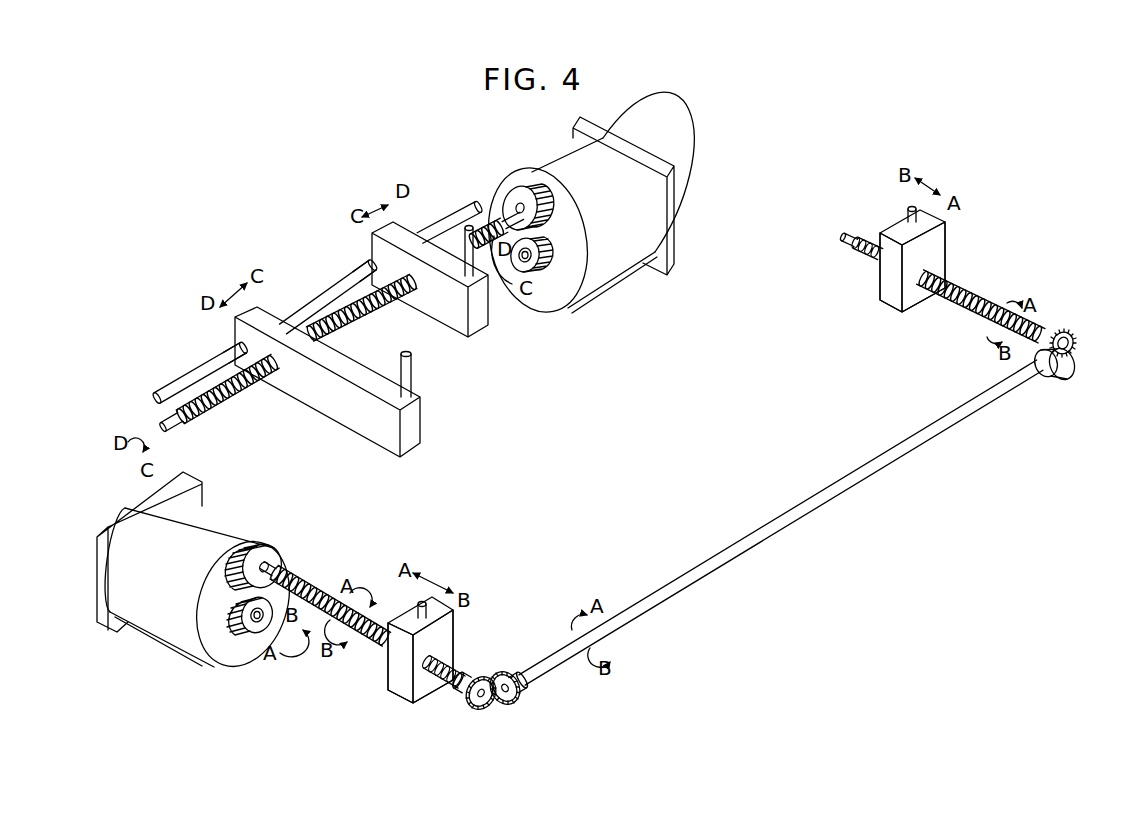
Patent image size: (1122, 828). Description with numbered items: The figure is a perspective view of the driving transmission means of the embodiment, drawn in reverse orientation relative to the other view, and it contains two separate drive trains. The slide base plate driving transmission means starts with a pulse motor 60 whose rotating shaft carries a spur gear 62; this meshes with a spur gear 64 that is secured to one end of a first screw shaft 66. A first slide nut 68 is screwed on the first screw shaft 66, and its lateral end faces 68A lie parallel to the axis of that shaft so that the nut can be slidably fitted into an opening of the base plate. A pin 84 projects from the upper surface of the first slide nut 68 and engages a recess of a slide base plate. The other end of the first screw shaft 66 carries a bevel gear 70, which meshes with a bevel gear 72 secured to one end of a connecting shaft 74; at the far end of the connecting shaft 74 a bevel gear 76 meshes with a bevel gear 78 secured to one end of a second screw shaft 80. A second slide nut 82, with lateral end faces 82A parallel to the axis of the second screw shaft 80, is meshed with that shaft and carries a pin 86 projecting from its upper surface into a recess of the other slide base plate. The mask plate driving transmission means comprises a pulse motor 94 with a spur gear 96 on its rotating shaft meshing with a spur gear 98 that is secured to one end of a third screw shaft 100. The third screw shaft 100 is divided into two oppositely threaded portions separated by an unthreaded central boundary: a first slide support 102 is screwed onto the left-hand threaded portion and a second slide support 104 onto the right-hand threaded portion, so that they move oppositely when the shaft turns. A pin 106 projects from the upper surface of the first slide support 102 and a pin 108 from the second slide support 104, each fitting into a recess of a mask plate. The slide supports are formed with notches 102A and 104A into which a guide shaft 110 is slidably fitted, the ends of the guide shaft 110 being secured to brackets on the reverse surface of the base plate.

The pulse motor 60 is at (172, 628).
The spur gear 62 is at (250, 632).
The spur gear 64 is at (266, 556).
The first screw shaft 66 is at (324, 590).
The first slide nut 68 is at (452, 623).
The lateral end faces 68A is at (458, 637).
The bevel gear 70 is at (476, 706).
The bevel gear 72 is at (518, 706).
The connecting shaft 74 is at (667, 601).
The bevel gear 76 is at (1064, 381).
The bevel gear 78 is at (1068, 331).
The second screw shaft 80 is at (972, 288).
The second slide nut 82 is at (935, 248).
The lateral end faces 82A is at (943, 227).
The pin 84 is at (410, 612).
The pin 86 is at (907, 215).
The pulse motor 94 is at (558, 167).
The spur gear 96 is at (540, 273).
The spur gear 98 is at (518, 195).
The third screw shaft 100 is at (354, 333).
The first slide support 102 is at (417, 443).
The notch 102A is at (235, 346).
The second slide support 104 is at (468, 330).
The notch 104A is at (370, 262).
The pin 106 is at (413, 378).
The pin 108 is at (476, 268).
The guide shaft 110 is at (301, 310).